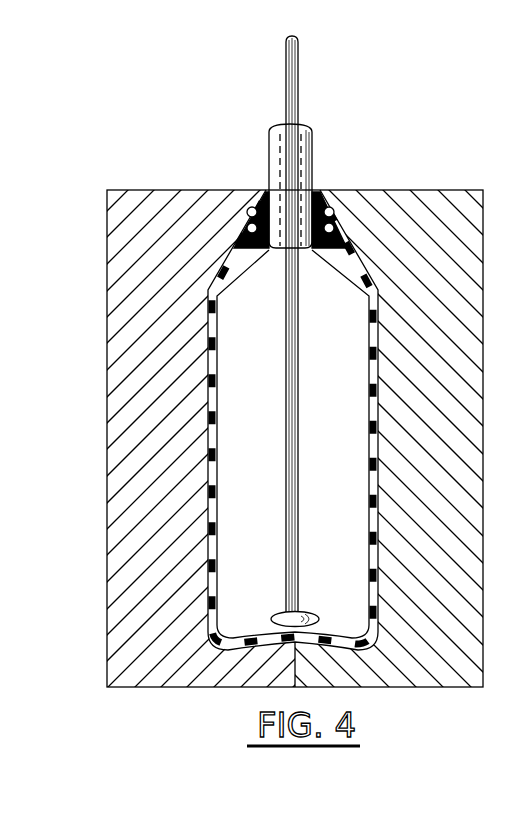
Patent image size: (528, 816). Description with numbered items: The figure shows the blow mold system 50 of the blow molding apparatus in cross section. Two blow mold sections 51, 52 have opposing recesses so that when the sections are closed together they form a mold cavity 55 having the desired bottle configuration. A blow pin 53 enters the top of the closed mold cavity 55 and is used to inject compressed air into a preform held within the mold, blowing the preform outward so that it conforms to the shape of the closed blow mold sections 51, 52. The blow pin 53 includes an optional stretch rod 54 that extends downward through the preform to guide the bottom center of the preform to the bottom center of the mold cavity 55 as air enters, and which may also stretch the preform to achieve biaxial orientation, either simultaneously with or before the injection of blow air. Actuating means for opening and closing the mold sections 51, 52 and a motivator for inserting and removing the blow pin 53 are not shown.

The blow mold system 50 is at (380, 86).
The blow mold section 51 is at (190, 212).
The blow mold section 52 is at (428, 222).
The blow pin 53 is at (292, 150).
The stretch rod 54 is at (287, 393).
The mold cavity 55 is at (243, 535).